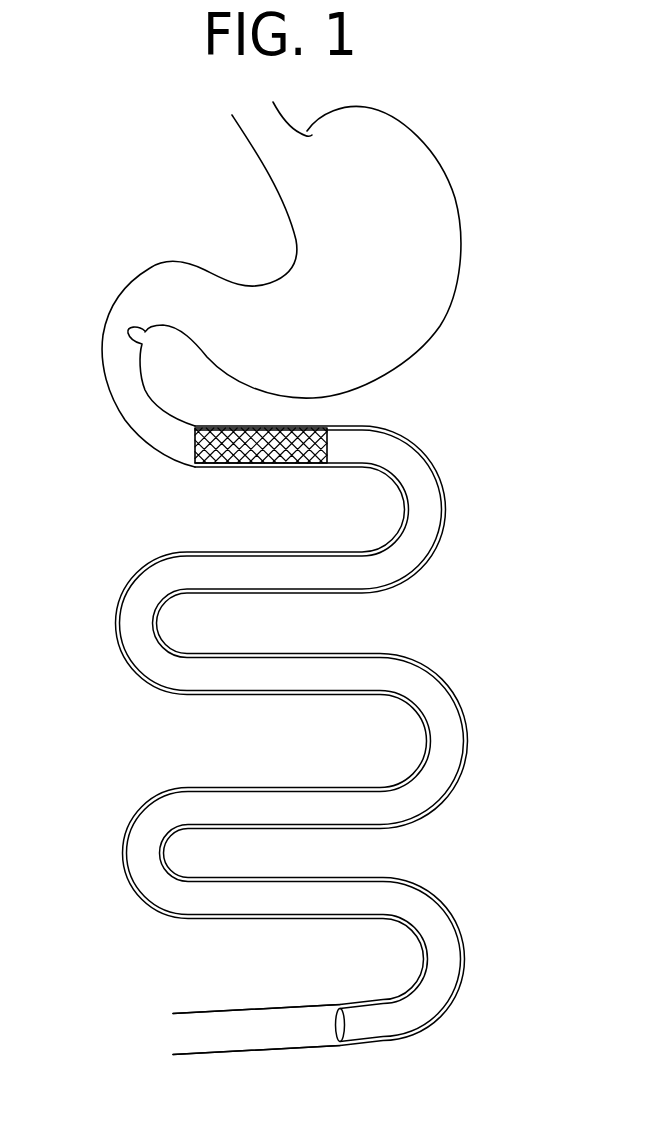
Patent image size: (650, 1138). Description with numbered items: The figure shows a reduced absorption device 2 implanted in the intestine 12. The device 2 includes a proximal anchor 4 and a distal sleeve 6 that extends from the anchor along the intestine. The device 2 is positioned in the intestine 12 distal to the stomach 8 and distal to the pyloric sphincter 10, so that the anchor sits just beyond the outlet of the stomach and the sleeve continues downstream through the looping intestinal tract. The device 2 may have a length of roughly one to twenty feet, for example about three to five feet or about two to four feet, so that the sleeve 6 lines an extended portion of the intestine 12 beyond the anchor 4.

The reduced absorption device 2 is at (351, 453).
The proximal anchor 4 is at (262, 455).
The distal sleeve 6 is at (425, 515).
The stomach 8 is at (440, 254).
The pyloric sphincter 10 is at (112, 320).
The intestine 12 is at (240, 1034).